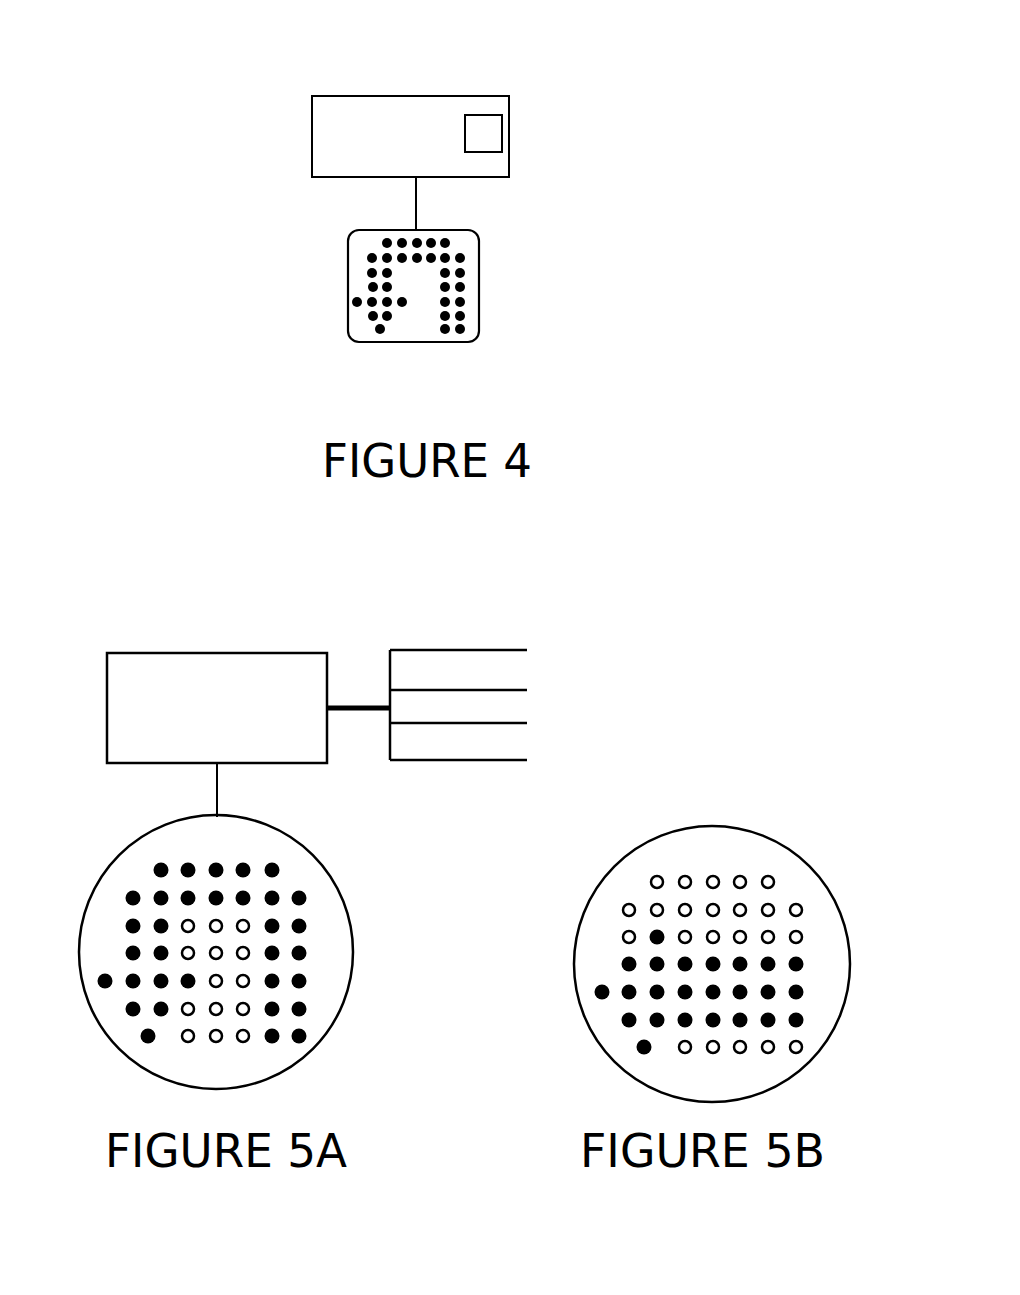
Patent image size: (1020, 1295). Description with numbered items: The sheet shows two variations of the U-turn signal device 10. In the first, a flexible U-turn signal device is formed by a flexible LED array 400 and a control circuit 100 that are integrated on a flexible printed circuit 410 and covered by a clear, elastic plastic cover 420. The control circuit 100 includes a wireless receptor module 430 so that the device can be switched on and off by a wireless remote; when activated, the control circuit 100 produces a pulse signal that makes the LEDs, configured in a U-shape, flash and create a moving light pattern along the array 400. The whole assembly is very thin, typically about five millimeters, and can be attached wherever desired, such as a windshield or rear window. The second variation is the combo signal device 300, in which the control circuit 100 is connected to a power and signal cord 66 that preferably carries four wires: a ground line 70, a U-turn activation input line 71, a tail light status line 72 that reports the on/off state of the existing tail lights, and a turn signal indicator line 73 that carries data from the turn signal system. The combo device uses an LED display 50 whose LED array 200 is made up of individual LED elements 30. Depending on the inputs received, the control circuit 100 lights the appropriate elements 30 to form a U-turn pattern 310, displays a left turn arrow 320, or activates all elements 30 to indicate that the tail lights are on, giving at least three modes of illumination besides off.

In FIG. 4, the U-turn signal device 10 is at (178, 188).
In FIG. 4, the control circuit 100 is at (318, 157).
In FIG. 5A, the control circuit 100 is at (240, 721).
In FIG. 4, the wireless receptor module 430 is at (478, 115).
In FIG. 4, the flexible LED array 400 is at (472, 293).
In FIG. 4, the flexible printed circuit 410 is at (479, 272).
In FIG. 4, the clear elastic plastic cover 420 is at (355, 272).
In FIG. 5A, the power and signal cord 66 is at (342, 713).
In FIG. 5A, the ground line 70 is at (432, 760).
In FIG. 5A, the U-turn activation input line 71 is at (497, 723).
In FIG. 5A, the tail light status line 72 is at (497, 690).
In FIG. 5A, the turn signal indicator line 73 is at (477, 650).
In FIG. 5A, the combo signal device 300 is at (140, 818).
In FIG. 5B, the combo signal device 300 is at (860, 930).
In FIG. 5A, the LED elements 30 is at (130, 926).
In FIG. 5A, the U-turn pattern 310 is at (322, 952).
In FIG. 5B, the left turn arrow 320 is at (568, 982).
In FIG. 5A, the LED display 50 is at (72, 988).
In FIG. 5A, the LED array 200 is at (72, 1003).